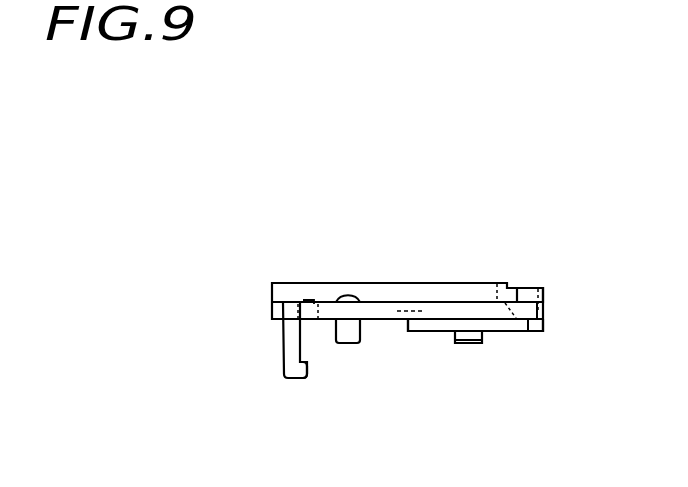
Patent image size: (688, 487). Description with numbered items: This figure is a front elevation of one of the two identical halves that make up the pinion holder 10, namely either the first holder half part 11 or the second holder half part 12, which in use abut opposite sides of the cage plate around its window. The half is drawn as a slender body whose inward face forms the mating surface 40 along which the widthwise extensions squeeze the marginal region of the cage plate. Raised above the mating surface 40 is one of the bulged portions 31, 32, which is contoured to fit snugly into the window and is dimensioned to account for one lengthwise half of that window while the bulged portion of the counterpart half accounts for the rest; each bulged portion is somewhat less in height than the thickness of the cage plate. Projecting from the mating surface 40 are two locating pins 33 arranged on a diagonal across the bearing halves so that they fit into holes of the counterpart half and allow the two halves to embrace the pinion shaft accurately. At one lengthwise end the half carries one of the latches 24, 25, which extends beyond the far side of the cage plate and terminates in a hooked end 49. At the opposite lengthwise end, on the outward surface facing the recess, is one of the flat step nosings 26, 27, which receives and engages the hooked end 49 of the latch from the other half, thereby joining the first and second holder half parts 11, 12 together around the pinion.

The pinion holder 10 is at (418, 261).
The first holder half part 11 is at (418, 261).
The second holder half part 12 is at (436, 282).
The latch 24 is at (239, 340).
The latch 25 is at (283, 338).
The flat step nosing 26 is at (574, 268).
The flat step nosing 27 is at (527, 288).
The bulged portion 31 is at (512, 353).
The bulged portion 32 is at (505, 328).
The locating pin 33 is at (350, 344).
The mating surface 40 is at (387, 321).
The hooked end 49 is at (306, 380).